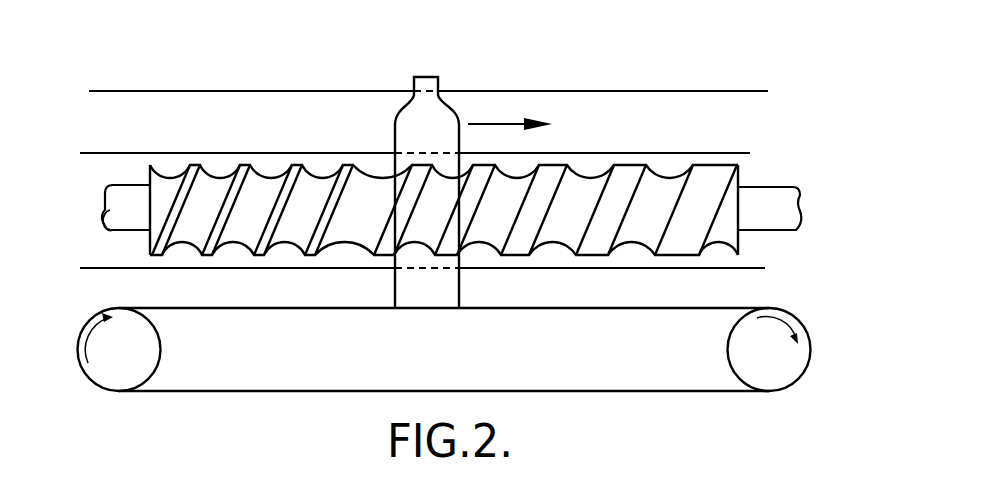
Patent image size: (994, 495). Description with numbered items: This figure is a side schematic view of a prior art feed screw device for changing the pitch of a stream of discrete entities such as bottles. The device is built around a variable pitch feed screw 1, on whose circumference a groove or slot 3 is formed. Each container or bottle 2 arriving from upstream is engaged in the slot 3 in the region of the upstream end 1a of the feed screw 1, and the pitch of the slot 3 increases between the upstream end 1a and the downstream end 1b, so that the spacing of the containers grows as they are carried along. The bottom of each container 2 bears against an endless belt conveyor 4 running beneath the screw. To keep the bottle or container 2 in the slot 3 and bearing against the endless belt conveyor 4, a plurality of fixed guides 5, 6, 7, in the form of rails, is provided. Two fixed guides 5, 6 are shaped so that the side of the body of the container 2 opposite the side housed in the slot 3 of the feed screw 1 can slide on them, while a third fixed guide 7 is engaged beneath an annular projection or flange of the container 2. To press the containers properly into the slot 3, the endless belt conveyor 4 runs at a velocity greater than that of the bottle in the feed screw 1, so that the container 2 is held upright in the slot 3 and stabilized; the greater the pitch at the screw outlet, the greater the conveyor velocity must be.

The variable pitch feed screw 1 is at (228, 155).
The upstream end 1a is at (147, 242).
The downstream end 1b is at (738, 168).
The container or bottle 2 is at (435, 115).
The groove or slot 3 is at (576, 207).
The endless belt conveyor 4 is at (700, 307).
The fixed guide 5 is at (133, 153).
The fixed guide 6 is at (133, 269).
The third fixed guide 7 is at (722, 91).